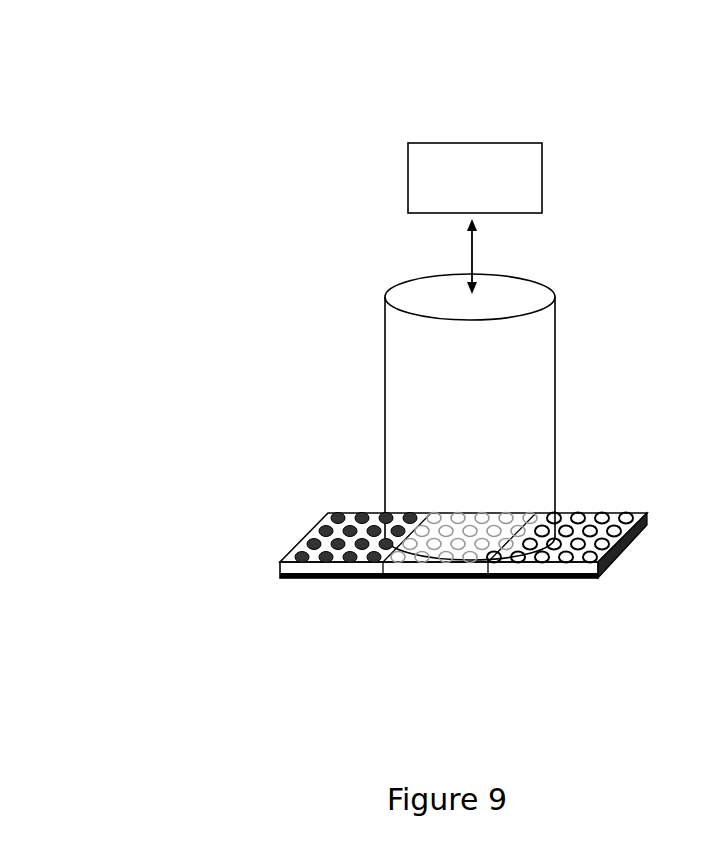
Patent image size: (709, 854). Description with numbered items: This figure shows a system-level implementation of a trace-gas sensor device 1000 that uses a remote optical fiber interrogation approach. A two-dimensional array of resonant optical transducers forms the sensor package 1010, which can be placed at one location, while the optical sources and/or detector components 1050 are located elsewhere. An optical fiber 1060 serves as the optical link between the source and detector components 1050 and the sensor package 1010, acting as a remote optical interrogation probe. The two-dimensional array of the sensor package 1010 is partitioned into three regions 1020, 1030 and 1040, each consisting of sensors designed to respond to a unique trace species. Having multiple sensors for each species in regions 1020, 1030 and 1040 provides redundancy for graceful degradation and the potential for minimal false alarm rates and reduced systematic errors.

The trace-gas sensor device system 1000 is at (128, 124).
The sensor package 1010 is at (298, 542).
The first region 1020 is at (317, 580).
The second region 1030 is at (442, 580).
The third region 1040 is at (567, 580).
The optical source and detector components 1050 is at (543, 163).
The optical fiber 1060 is at (555, 350).